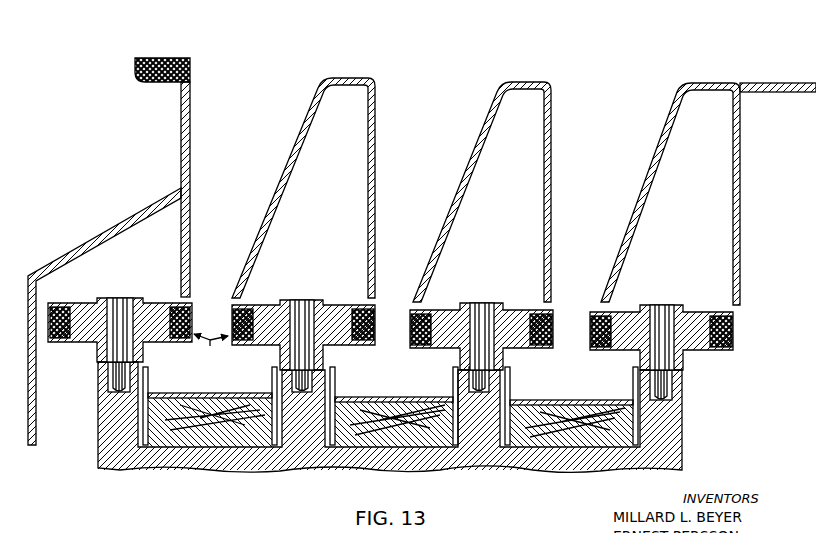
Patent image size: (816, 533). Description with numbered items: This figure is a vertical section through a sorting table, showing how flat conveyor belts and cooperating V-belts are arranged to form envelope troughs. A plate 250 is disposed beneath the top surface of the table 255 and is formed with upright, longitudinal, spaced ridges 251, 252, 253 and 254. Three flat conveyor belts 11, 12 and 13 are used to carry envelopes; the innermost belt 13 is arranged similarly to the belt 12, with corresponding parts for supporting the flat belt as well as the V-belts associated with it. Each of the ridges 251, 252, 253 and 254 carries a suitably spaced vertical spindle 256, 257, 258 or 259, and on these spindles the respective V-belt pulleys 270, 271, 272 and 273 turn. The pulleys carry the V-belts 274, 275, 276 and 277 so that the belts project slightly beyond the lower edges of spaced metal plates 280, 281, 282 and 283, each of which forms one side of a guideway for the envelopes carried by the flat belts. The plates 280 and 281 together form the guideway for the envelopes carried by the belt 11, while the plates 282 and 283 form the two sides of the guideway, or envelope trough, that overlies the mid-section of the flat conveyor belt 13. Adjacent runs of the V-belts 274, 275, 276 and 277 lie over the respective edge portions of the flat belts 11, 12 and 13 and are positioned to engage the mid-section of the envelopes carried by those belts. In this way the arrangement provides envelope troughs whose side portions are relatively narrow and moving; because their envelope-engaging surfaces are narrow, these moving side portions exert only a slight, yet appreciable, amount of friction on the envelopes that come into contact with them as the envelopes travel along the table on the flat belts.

The flat conveyor belt 11 is at (209, 394).
The flat conveyor belt 12 is at (390, 397).
The flat conveyor belt 13 is at (560, 401).
The plate 250 is at (108, 474).
The ridge 251 is at (98, 429).
The ridge 252 is at (322, 418).
The ridge 253 is at (458, 393).
The ridge 254 is at (682, 387).
The table 255 is at (770, 82).
The vertical spindle 256 is at (112, 378).
The vertical spindle 257 is at (322, 374).
The vertical spindle 258 is at (470, 376).
The vertical spindle 259 is at (668, 378).
The V-belt pulley 270 is at (80, 302).
The V-belt pulley 271 is at (268, 305).
The V-belt pulley 272 is at (443, 310).
The V-belt pulley 273 is at (625, 313).
The V-belt 274 is at (210, 340).
The V-belt 275 is at (370, 306).
The V-belt 276 is at (412, 313).
The V-belt 277 is at (591, 316).
The metal plate 280 is at (190, 165).
The metal plate 281 is at (302, 132).
The metal plate 282 is at (551, 166).
The metal plate 283 is at (650, 166).